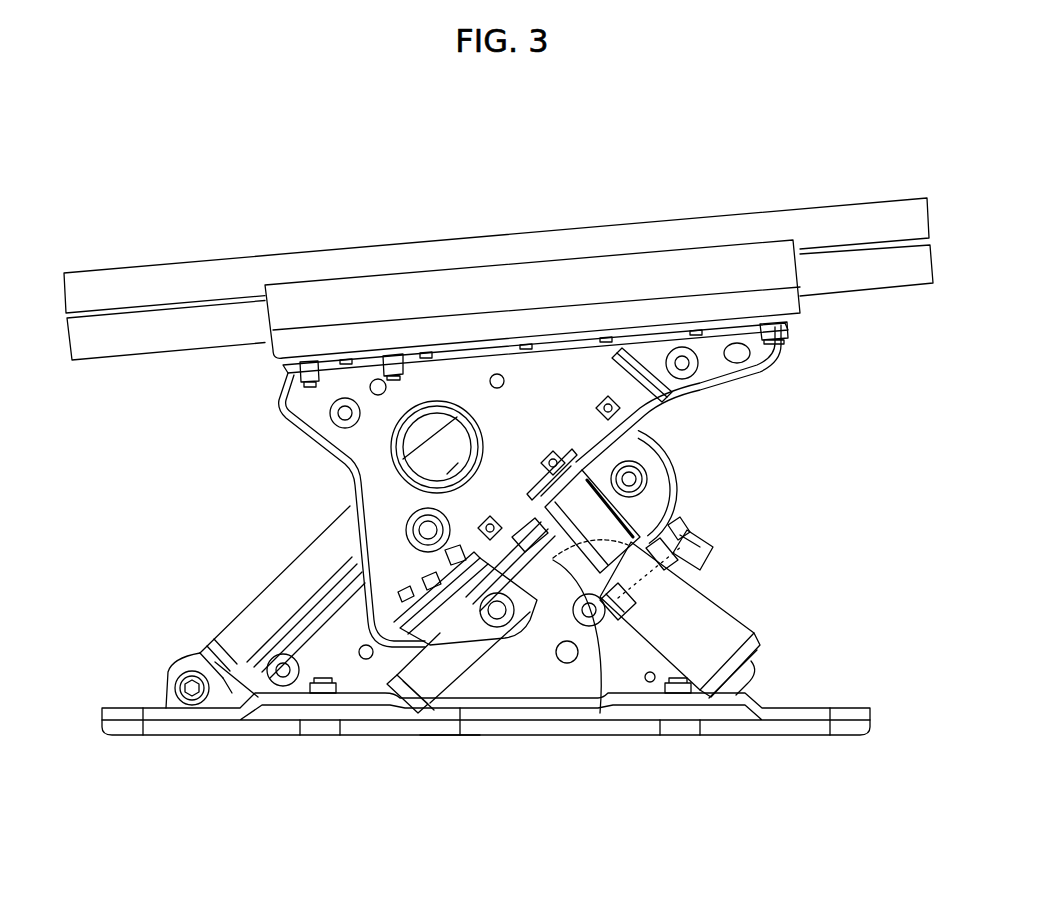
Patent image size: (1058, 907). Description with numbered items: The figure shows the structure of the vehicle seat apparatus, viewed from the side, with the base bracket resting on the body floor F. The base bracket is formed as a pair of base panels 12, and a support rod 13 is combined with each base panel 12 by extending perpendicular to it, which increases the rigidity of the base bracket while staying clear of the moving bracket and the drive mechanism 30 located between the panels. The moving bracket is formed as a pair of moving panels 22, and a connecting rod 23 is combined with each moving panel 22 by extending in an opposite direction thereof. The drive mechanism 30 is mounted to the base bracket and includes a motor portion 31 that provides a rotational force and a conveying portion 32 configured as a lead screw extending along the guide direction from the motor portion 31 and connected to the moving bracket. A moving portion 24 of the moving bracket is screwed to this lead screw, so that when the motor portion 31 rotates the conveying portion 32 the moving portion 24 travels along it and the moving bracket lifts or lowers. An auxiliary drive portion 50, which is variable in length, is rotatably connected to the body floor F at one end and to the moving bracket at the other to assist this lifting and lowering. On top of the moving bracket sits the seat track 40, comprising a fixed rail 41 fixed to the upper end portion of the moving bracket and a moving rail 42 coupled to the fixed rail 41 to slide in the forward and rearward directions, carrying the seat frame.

The base panel 12 is at (537, 685).
The support rod 13 is at (640, 445).
The moving panel 22 is at (470, 380).
The connecting rod 23 is at (328, 411).
The moving portion 24 is at (395, 713).
The drive mechanism 30 is at (812, 506).
The motor portion 31 is at (720, 625).
The conveying portion 32 is at (678, 553).
The seat track 40 is at (262, 253).
The fixed rail 41 is at (862, 284).
The moving rail 42 is at (841, 205).
The auxiliary drive portion 50 is at (243, 623).
The body floor F is at (450, 727).